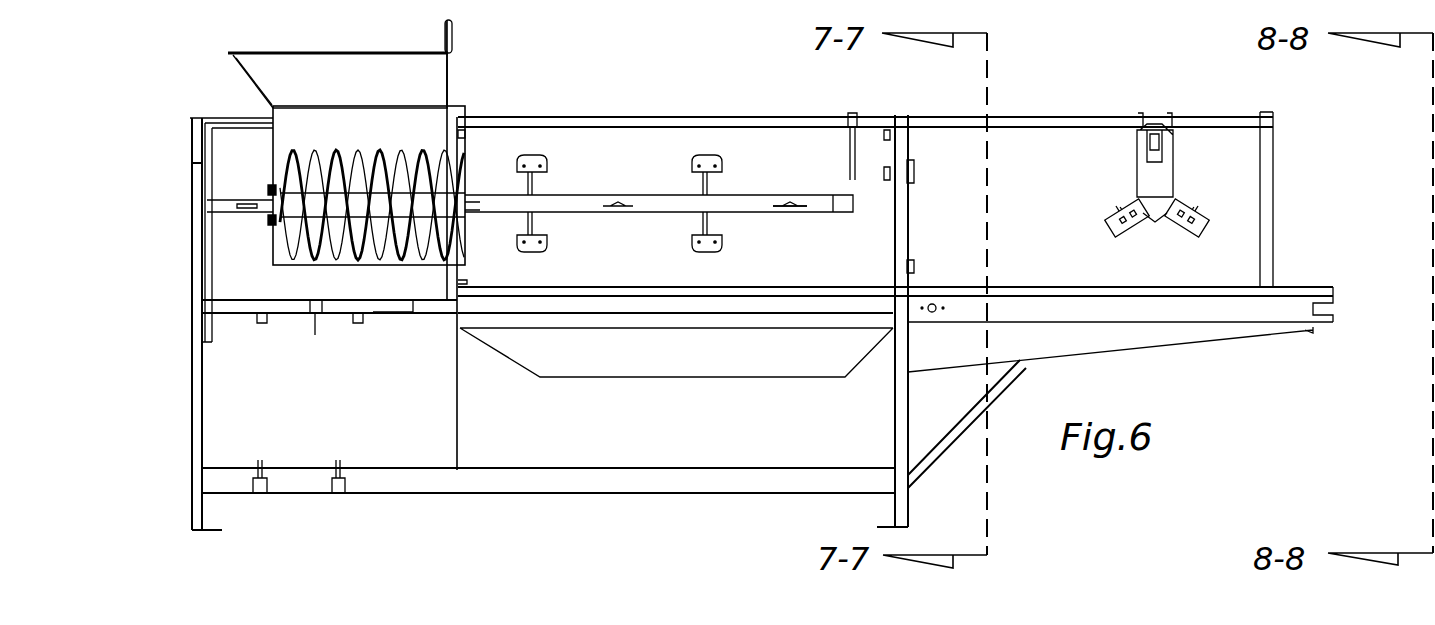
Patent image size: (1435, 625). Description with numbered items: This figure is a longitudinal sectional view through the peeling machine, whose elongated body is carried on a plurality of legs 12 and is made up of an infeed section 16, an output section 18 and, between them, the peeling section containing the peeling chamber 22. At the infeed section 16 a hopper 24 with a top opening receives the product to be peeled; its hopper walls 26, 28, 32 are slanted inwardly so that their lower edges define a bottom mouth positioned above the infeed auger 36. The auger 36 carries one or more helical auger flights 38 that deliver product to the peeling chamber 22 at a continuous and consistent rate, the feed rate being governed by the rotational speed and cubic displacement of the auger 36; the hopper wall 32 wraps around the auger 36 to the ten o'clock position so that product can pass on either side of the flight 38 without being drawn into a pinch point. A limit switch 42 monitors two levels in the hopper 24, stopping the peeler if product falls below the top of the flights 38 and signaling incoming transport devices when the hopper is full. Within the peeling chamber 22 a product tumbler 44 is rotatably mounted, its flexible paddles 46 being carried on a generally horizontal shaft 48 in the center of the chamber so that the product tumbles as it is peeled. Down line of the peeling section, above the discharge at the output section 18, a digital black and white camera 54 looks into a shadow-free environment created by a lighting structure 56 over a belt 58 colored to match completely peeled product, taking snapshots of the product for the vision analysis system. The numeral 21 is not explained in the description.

The legs 12 is at (192, 517).
The infeed section 16 is at (170, 88).
The output section 18 is at (1007, 150).
The hopper lid 21 is at (393, 20).
The peeling chamber 22 is at (613, 140).
The hopper 24 is at (252, 0).
The hopper wall 26 is at (357, 96).
The hopper wall 28 is at (253, 81).
The hopper wall 32 is at (448, 88).
The infeed auger 36 is at (308, 282).
The helical auger flight 38 is at (333, 150).
The limit switch 42 is at (453, 25).
The product tumbler 44 is at (792, 192).
The flexible paddles 46 is at (690, 157).
The horizontal shaft 48 is at (605, 192).
The digital black and white camera 54 is at (1107, 150).
The lighting structure 56 is at (1117, 200).
The belt 58 is at (1072, 283).